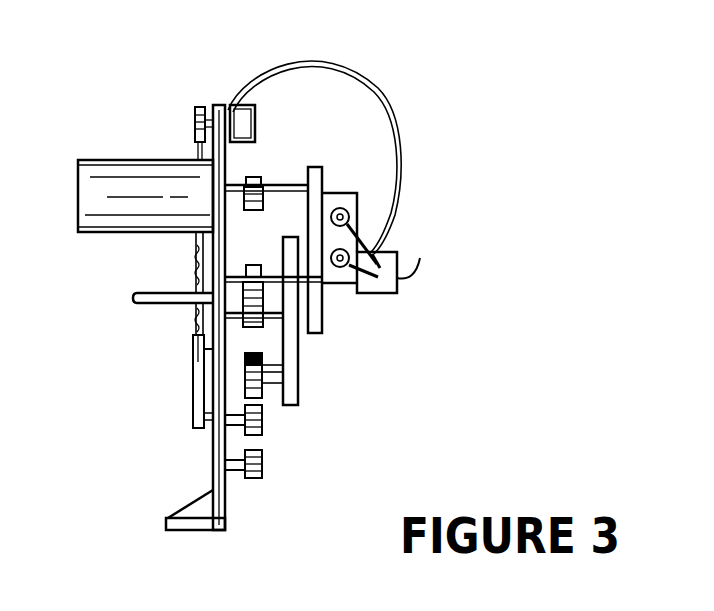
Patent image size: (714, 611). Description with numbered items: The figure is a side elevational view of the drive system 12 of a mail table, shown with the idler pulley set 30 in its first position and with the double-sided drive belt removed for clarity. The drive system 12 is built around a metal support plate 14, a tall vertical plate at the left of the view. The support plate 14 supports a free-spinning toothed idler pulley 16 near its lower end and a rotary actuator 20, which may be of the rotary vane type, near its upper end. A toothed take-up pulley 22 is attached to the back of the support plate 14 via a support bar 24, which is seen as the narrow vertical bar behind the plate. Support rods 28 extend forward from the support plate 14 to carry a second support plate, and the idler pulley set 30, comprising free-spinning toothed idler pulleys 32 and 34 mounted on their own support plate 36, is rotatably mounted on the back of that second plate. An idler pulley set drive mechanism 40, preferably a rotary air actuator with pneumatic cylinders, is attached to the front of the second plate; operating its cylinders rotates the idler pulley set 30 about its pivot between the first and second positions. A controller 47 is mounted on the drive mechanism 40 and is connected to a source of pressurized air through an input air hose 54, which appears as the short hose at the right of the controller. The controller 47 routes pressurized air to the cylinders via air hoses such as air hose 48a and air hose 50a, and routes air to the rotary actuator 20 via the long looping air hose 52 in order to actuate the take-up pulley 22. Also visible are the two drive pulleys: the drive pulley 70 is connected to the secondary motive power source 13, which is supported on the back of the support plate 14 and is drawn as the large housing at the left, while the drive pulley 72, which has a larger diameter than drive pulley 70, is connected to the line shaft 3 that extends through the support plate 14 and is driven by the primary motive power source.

The drive system 12 is at (148, 75).
The secondary motive power source 13 is at (103, 183).
The support plate 14 is at (220, 118).
The rotary actuator 20 is at (255, 125).
The air hose 52 is at (355, 72).
The line shaft 3 is at (150, 300).
The support bar 24 is at (193, 425).
The drive pulley 70 is at (255, 178).
The support rods 28 is at (287, 183).
The drive pulley 72 is at (250, 265).
The support plate 36 is at (300, 392).
The idler pulley 34 is at (262, 360).
The idler pulley 32 is at (265, 395).
The idler pulley set 30 is at (335, 396).
The take-up pulley 22 is at (265, 427).
The idler pulley 16 is at (253, 482).
The idler pulley set drive mechanism 40 is at (360, 195).
The controller 47 is at (397, 292).
The air hose 48a is at (350, 228).
The air hose 50a is at (368, 283).
The input air hose 54 is at (420, 265).